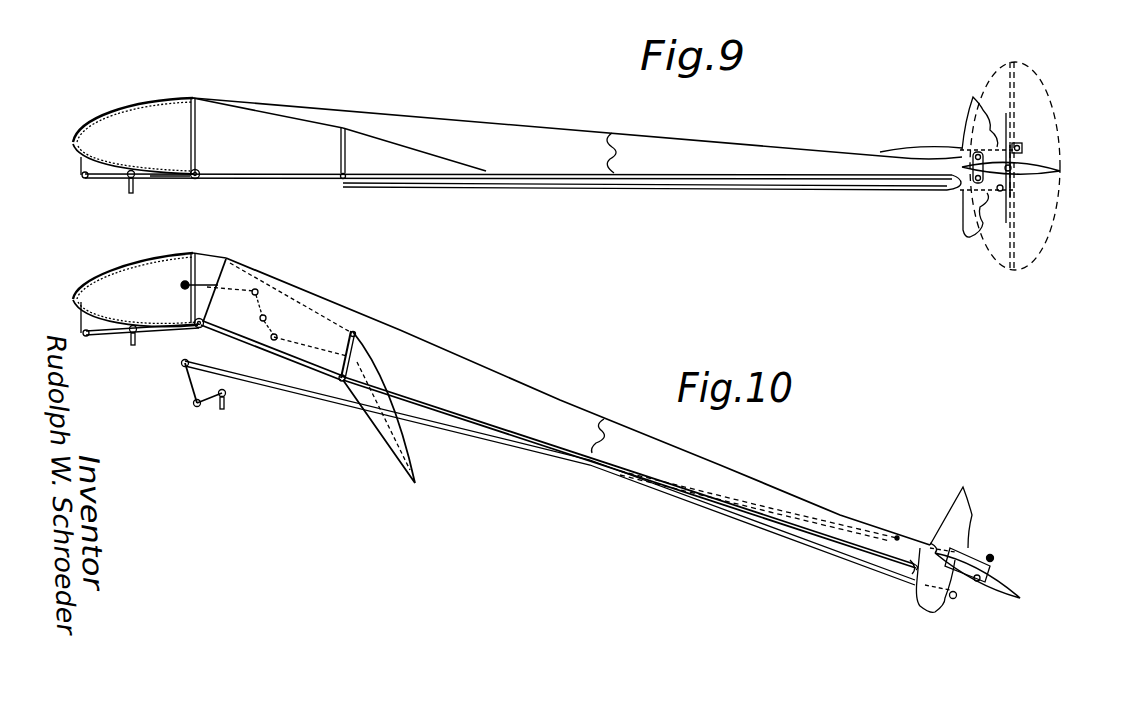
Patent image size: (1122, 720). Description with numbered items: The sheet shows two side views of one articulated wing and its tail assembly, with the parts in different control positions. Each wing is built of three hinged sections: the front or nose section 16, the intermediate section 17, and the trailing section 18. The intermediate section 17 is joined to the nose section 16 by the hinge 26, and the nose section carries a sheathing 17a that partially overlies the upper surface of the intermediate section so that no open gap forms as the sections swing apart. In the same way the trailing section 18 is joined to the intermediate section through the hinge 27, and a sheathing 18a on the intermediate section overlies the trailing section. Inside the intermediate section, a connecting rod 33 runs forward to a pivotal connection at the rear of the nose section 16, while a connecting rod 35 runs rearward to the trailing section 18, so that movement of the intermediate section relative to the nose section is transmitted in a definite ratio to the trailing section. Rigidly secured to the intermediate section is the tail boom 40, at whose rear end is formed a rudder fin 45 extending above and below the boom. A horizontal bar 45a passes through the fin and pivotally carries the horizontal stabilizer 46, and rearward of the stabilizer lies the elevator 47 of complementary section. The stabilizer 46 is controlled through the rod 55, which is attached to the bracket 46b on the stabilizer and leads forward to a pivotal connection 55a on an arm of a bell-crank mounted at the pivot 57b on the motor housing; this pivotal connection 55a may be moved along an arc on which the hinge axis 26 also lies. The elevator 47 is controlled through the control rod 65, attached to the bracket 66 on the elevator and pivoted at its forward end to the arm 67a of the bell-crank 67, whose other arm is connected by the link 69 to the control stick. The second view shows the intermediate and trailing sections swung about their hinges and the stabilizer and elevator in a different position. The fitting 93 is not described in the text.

In FIG. 9, the nose section 16 is at (142, 103).
In FIG. 10, the nose section 16 is at (138, 266).
In FIG. 9, the sheathing 17a is at (195, 96).
In FIG. 10, the sheathing 17a is at (207, 252).
In FIG. 9, the intermediate section 17 is at (244, 110).
In FIG. 10, the intermediate section 17 is at (288, 300).
In FIG. 9, the sheathing 18a is at (344, 128).
In FIG. 10, the sheathing 18a is at (370, 347).
In FIG. 9, the trailing section 18 is at (402, 146).
In FIG. 10, the trailing section 18 is at (412, 468).
In FIG. 9, the tail boom 40 is at (587, 133).
In FIG. 10, the tail boom 40 is at (540, 397).
In FIG. 9, the control rod 65 is at (907, 155).
In FIG. 10, the control rod 65 is at (330, 404).
In FIG. 9, the rudder fin 45 is at (975, 127).
In FIG. 10, the rudder fin 45 is at (957, 512).
In FIG. 9, the bracket 66 is at (1023, 150).
In FIG. 10, the bracket 66 is at (995, 556).
In FIG. 9, the elevator 47 is at (1040, 173).
In FIG. 10, the elevator 47 is at (1000, 585).
In FIG. 9, the bracket 46b is at (1004, 190).
In FIG. 9, the horizontal stabilizer 46 is at (958, 187).
In FIG. 10, the horizontal stabilizer 46 is at (915, 572).
In FIG. 9, the rod 55 is at (846, 191).
In FIG. 10, the rod 55 is at (278, 356).
In FIG. 9, the hinge 27 is at (350, 178).
In FIG. 10, the hinge 27 is at (342, 383).
In FIG. 9, the hinge 26 is at (196, 179).
In FIG. 9, the pivotal connection 55a is at (192, 180).
In FIG. 10, the pivotal connection 55a is at (195, 328).
In FIG. 9, the attachment fitting 93 is at (136, 178).
In FIG. 10, the attachment fitting 93 is at (131, 334).
In FIG. 9, the pivot 57b is at (85, 179).
In FIG. 10, the connecting rod 33 is at (228, 263).
In FIG. 10, the connecting rod 35 is at (350, 356).
In FIG. 10, the arm 67a is at (188, 385).
In FIG. 10, the bell-crank 67 is at (194, 406).
In FIG. 10, the link 69 is at (226, 410).
In FIG. 10, the horizontal bar 45a is at (958, 596).